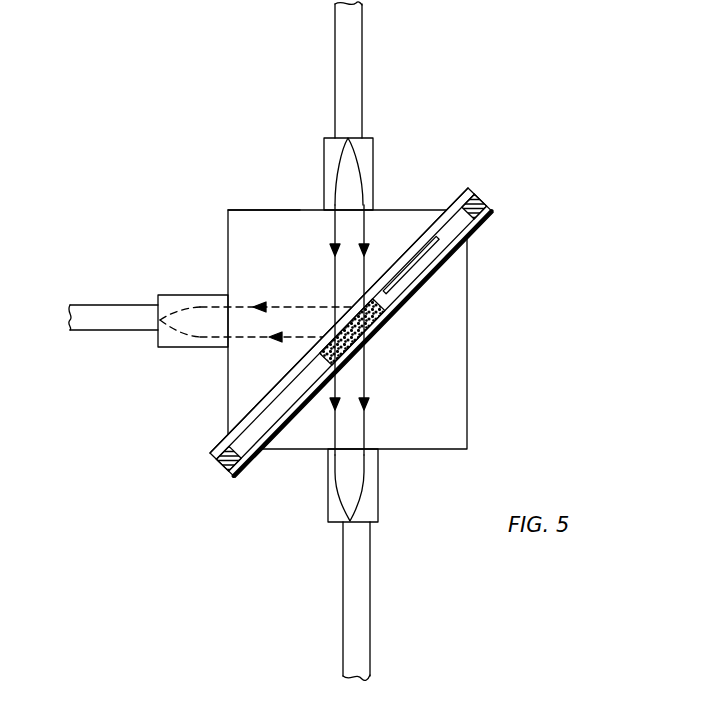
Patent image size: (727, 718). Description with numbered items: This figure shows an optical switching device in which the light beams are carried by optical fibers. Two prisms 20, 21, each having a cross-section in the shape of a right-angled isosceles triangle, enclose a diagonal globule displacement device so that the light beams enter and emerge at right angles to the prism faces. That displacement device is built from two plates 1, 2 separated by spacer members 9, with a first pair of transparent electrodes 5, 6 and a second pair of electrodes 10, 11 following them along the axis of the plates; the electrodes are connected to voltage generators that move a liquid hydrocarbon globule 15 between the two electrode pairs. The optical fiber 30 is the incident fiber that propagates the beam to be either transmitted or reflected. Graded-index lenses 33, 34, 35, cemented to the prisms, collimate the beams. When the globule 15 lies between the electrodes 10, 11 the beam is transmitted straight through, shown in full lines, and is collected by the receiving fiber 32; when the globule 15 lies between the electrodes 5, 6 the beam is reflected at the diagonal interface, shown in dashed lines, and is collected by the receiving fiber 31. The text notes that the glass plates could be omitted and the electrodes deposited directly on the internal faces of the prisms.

The plate 1 is at (480, 218).
The plate 2 is at (459, 207).
The electrode 5 is at (425, 246).
The electrode 6 is at (437, 254).
The spacer member 9 is at (481, 200).
The electrode 10 is at (347, 322).
The electrode 11 is at (346, 346).
The globule 15 is at (373, 313).
The prism 20 is at (468, 412).
The prism 21 is at (246, 212).
The optical fiber 30 is at (339, 47).
The receiving fiber 31 is at (106, 305).
The receiving fiber 32 is at (345, 598).
The lens 33 is at (327, 152).
The lens 34 is at (188, 297).
The lens 35 is at (329, 490).